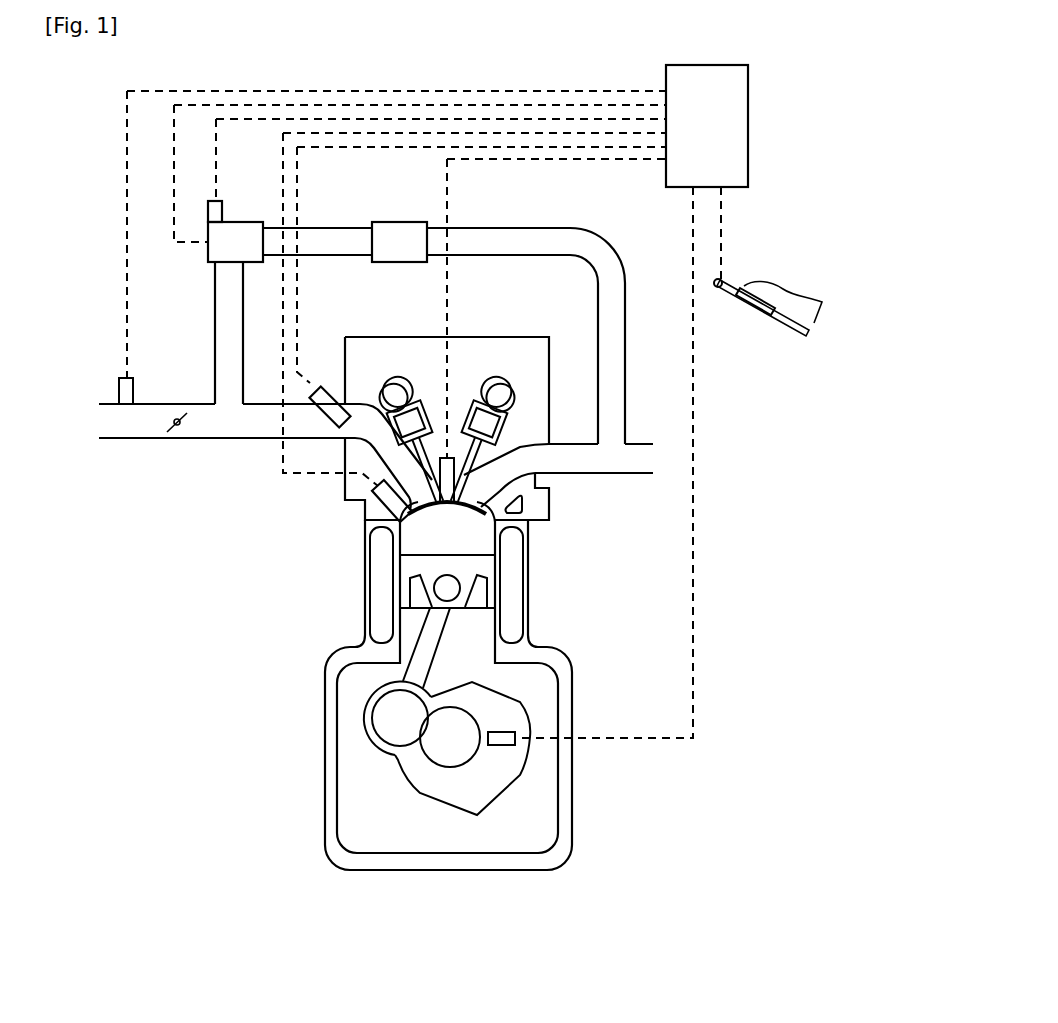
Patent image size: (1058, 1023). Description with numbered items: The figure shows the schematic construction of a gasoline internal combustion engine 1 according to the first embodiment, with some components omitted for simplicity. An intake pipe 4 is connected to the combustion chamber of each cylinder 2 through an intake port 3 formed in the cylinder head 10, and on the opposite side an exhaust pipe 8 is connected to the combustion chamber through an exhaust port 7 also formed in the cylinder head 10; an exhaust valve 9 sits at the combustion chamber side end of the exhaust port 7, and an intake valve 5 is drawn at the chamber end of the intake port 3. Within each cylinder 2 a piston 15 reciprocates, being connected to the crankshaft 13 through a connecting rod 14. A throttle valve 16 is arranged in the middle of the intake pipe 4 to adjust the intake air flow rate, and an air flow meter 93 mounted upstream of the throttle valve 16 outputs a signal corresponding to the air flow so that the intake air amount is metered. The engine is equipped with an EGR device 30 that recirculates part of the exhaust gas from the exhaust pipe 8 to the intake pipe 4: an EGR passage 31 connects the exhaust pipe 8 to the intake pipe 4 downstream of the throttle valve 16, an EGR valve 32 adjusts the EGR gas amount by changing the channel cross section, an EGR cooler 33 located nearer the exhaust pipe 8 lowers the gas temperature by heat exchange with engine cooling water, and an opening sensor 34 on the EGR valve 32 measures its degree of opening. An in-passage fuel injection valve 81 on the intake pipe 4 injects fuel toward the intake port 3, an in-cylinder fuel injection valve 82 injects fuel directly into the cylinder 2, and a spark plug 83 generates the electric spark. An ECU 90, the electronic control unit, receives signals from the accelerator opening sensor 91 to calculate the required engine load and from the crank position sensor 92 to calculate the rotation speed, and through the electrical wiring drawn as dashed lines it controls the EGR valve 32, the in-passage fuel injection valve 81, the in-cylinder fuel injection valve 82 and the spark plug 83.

The internal combustion engine 1 is at (618, 602).
The cylinder 2 is at (445, 528).
The intake port 3 is at (357, 452).
The intake pipe 4 is at (228, 440).
The intake valve 5 is at (427, 514).
The exhaust port 7 is at (521, 448).
The exhaust pipe 8 is at (603, 474).
The exhaust valve 9 is at (467, 512).
The cylinder head 10 is at (343, 494).
The crankshaft 13 is at (478, 760).
The connecting rod 14 is at (448, 636).
The piston 15 is at (470, 583).
The throttle valve 16 is at (176, 418).
The EGR device 30 is at (521, 211).
The EGR passage 31 is at (312, 227).
The EGR valve 32 is at (237, 222).
The EGR cooler 33 is at (400, 222).
The opening sensor 34 is at (207, 212).
The in-passage fuel injection valve 81 is at (335, 391).
The in-cylinder fuel injection valve 82 is at (383, 502).
The spark plug 83 is at (453, 513).
The ECU 90 is at (748, 103).
The accelerator opening sensor 91 is at (722, 279).
The crank position sensor 92 is at (503, 730).
The air flow meter 93 is at (140, 388).